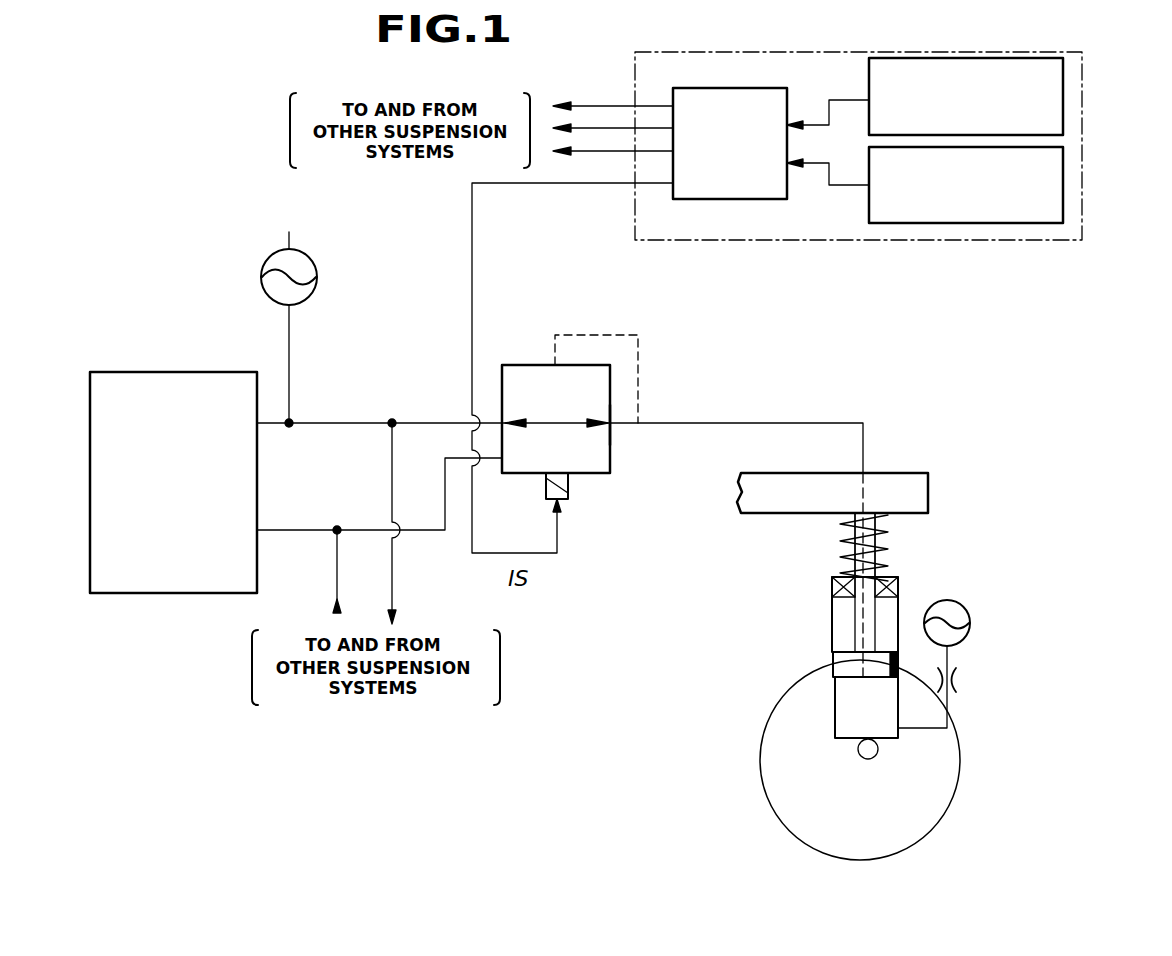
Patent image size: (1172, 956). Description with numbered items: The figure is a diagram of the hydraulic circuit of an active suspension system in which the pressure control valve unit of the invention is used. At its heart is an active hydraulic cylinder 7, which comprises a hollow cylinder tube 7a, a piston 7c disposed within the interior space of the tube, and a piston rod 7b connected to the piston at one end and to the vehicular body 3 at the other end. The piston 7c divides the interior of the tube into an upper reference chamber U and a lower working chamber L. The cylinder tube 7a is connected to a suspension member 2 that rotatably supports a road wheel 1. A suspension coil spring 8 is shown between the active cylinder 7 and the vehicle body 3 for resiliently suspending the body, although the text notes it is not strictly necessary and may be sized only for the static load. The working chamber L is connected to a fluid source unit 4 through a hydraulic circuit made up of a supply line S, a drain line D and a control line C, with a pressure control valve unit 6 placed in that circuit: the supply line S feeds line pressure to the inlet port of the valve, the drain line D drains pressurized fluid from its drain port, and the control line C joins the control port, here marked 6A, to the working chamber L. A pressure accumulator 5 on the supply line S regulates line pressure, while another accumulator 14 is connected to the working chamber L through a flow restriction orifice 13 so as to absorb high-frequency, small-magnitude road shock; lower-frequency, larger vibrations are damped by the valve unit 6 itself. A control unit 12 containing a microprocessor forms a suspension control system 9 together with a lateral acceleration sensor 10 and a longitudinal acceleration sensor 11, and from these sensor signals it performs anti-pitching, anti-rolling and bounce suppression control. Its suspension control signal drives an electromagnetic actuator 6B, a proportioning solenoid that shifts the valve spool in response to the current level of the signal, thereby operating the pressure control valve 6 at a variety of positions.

The road wheel 1 is at (760, 791).
The suspension member 2 is at (868, 759).
The vehicular body 3 is at (905, 473).
The fluid source unit 4 is at (188, 372).
The pressure accumulator 5 is at (289, 249).
The pressure control valve unit 6 is at (524, 365).
The valve outlet port 6A is at (610, 443).
The electromagnetic actuator 6B is at (568, 480).
The active hydraulic cylinder 7 is at (819, 632).
The cylinder tube 7a is at (832, 598).
The piston rod 7b is at (840, 545).
The piston 7c is at (843, 660).
The suspension coil spring 8 is at (880, 528).
The suspension control system 9 is at (702, 50).
The lateral acceleration sensor 10 is at (1063, 213).
The longitudinal acceleration sensor 11 is at (1063, 70).
The control unit 12 is at (731, 199).
The flow restriction orifice 13 is at (960, 683).
The accumulator 14 is at (950, 601).
The supply line S is at (420, 423).
The drain line D is at (423, 530).
The control line C is at (699, 423).
The upper reference chamber U is at (887, 615).
The lower working chamber L is at (848, 718).